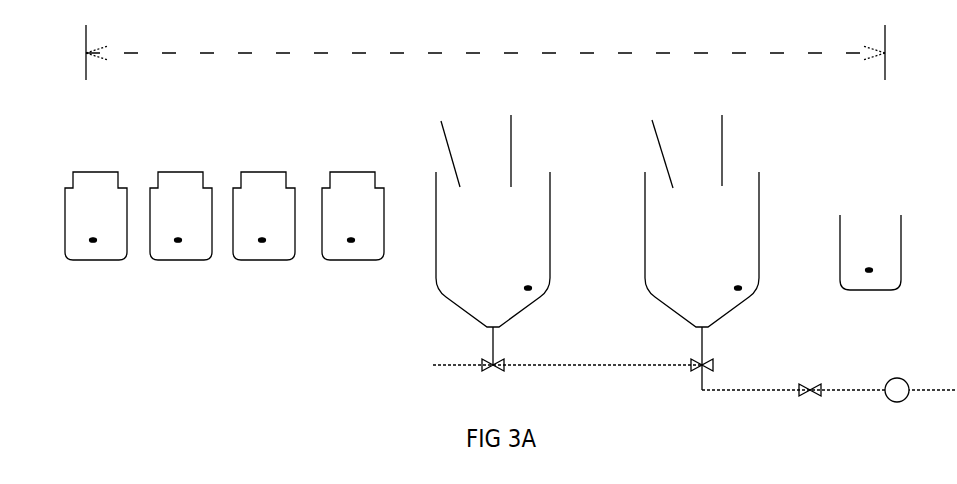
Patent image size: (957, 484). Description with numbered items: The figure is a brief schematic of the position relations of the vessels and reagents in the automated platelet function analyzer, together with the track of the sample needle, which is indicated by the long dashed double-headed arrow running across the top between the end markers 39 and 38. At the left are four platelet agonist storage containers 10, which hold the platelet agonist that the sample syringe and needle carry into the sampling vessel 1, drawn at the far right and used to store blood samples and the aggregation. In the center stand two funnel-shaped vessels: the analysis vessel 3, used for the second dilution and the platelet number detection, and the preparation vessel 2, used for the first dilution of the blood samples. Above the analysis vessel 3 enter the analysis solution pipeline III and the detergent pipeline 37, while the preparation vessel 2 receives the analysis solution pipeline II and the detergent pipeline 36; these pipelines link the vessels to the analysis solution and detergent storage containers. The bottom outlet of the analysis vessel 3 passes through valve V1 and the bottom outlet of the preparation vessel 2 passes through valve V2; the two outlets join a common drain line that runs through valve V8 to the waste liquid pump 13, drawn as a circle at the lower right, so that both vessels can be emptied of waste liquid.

The transfer path start / left end of conveyance 39 is at (481, 64).
The transfer path end / right end of conveyance 38 is at (875, 64).
The platelet agonist storage container 10 is at (93, 240).
The analysis vessel 3 is at (528, 288).
The detergent pipeline 37 is at (526, 151).
The analysis solution pipeline III is at (436, 154).
The valve V1 is at (494, 363).
The preparation vessel 2 is at (738, 288).
The detergent pipeline 36 is at (737, 150).
The analysis solution pipeline II is at (655, 154).
The valve V2 is at (713, 358).
The valve V8 is at (810, 381).
The waste liquid pump 13 is at (897, 382).
The sampling vessel 1 is at (869, 270).